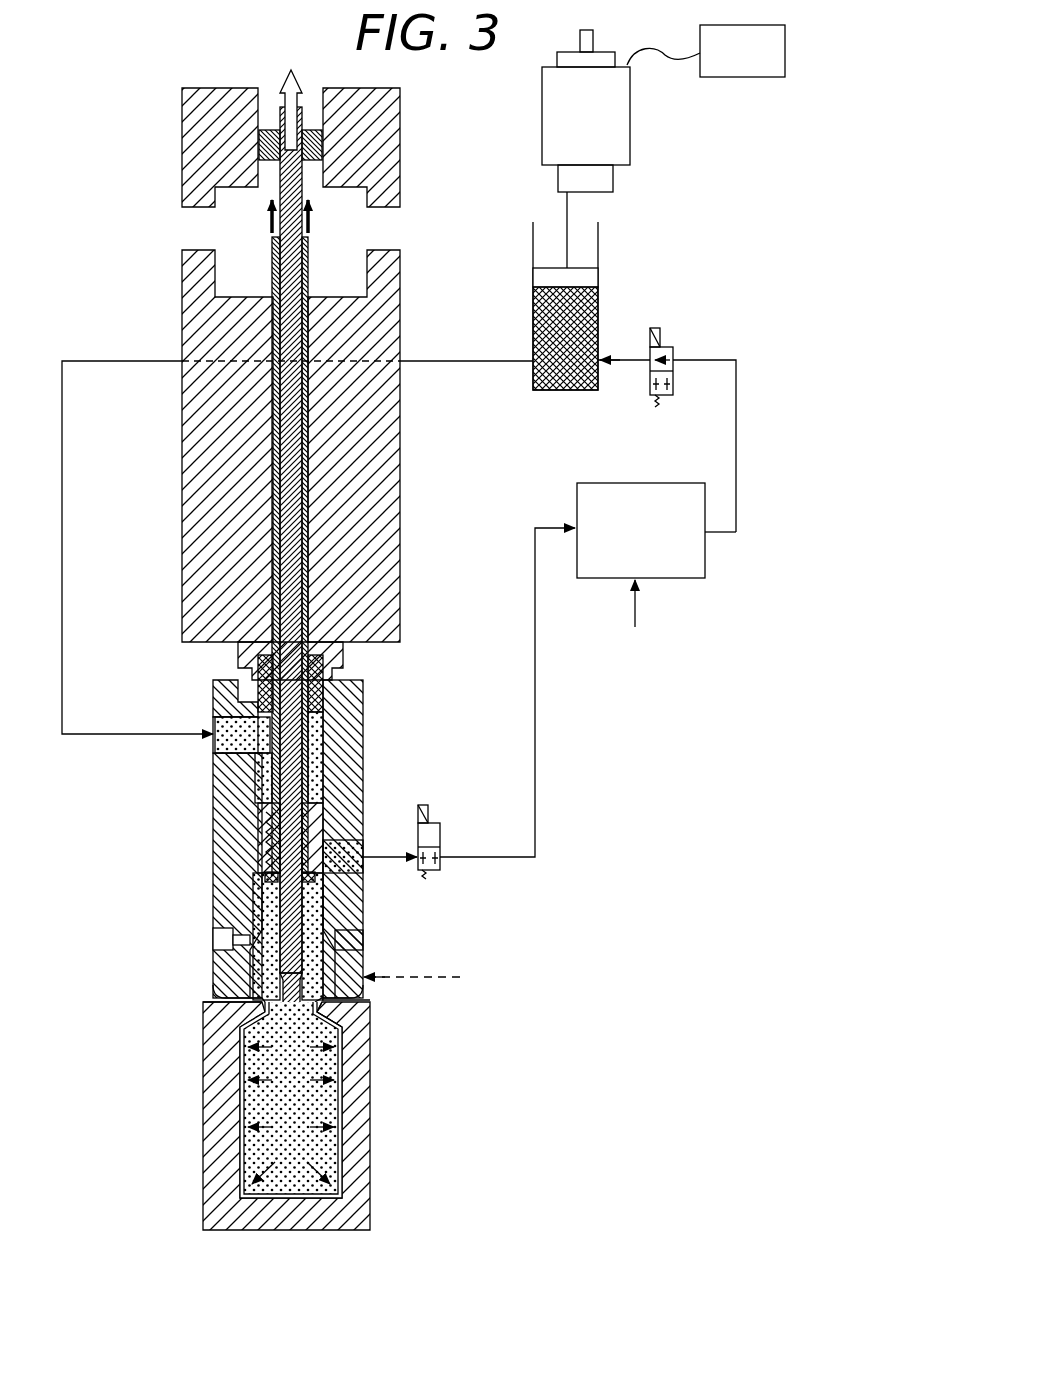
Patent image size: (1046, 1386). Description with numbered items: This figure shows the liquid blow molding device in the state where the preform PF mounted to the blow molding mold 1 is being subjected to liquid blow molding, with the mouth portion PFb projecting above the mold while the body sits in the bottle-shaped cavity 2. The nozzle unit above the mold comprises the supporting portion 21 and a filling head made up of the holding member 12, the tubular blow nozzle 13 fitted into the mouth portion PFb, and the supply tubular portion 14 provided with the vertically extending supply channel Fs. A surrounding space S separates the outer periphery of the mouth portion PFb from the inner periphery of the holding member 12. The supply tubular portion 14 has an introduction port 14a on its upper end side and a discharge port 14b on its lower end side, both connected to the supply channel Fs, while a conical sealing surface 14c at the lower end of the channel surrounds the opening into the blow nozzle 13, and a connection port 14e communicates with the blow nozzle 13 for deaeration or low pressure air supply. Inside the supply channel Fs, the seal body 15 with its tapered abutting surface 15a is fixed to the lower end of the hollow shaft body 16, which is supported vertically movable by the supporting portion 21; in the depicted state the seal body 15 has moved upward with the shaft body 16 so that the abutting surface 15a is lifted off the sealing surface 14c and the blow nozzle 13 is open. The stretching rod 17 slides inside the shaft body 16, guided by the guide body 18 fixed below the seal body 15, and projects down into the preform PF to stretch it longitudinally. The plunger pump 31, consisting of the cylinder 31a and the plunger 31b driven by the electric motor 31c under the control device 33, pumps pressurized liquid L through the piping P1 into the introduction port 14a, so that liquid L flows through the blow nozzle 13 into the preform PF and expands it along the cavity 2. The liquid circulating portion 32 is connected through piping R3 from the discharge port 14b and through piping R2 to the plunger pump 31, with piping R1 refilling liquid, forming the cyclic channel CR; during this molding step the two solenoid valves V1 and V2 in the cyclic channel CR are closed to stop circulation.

The blow molding mold 1 is at (365, 1143).
The cavity 2 is at (345, 1170).
The holding member 12 is at (213, 993).
The blow nozzle 13 is at (252, 932).
The supply tubular portion 14 is at (215, 855).
The introduction port 14a is at (215, 728).
The discharge port 14b is at (340, 858).
The sealing surface 14c is at (348, 925).
The connection port 14e is at (218, 940).
The seal body 15 is at (255, 797).
The abutting surface 15a is at (345, 872).
The shaft body 16 is at (270, 588).
The stretching rod 17 is at (293, 628).
The guide body 18 is at (322, 845).
The supporting portion 21 is at (403, 548).
The plunger pump 31 is at (627, 210).
The cylinder 31a is at (598, 255).
The plunger 31b is at (590, 278).
The electric motor 31c is at (630, 113).
The liquid circulating portion 32 is at (660, 583).
The control device 33 is at (785, 52).
The liquid L is at (533, 320).
The supply channel Fs is at (325, 790).
The piping P1 is at (440, 362).
The piping R1 is at (639, 628).
The piping R2 is at (736, 438).
The piping R3 is at (535, 750).
The solenoid valve V1 is at (675, 390).
The solenoid valve V2 is at (437, 870).
The surrounding space S is at (362, 992).
The preform PF is at (345, 1100).
The mouth portion PFb is at (367, 1000).
The cyclic channel CR is at (550, 680).